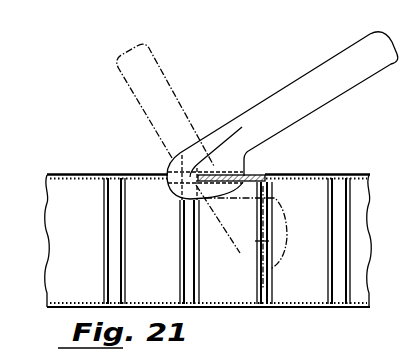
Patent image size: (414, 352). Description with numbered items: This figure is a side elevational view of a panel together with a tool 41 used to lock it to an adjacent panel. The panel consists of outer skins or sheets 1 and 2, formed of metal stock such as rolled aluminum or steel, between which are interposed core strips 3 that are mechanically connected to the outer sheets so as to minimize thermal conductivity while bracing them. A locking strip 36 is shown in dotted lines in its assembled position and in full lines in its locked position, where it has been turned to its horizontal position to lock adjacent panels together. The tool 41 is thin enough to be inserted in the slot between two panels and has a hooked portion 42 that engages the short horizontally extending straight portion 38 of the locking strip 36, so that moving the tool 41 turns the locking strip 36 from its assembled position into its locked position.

The outer skin 1 is at (77, 173).
The outer skin 2 is at (49, 309).
The core strip 3 is at (135, 174).
The locking strip 36 is at (250, 174).
The short horizontally extending straight portion 38 is at (211, 160).
The tool 41 is at (178, 88).
The hooked portion 42 is at (168, 196).